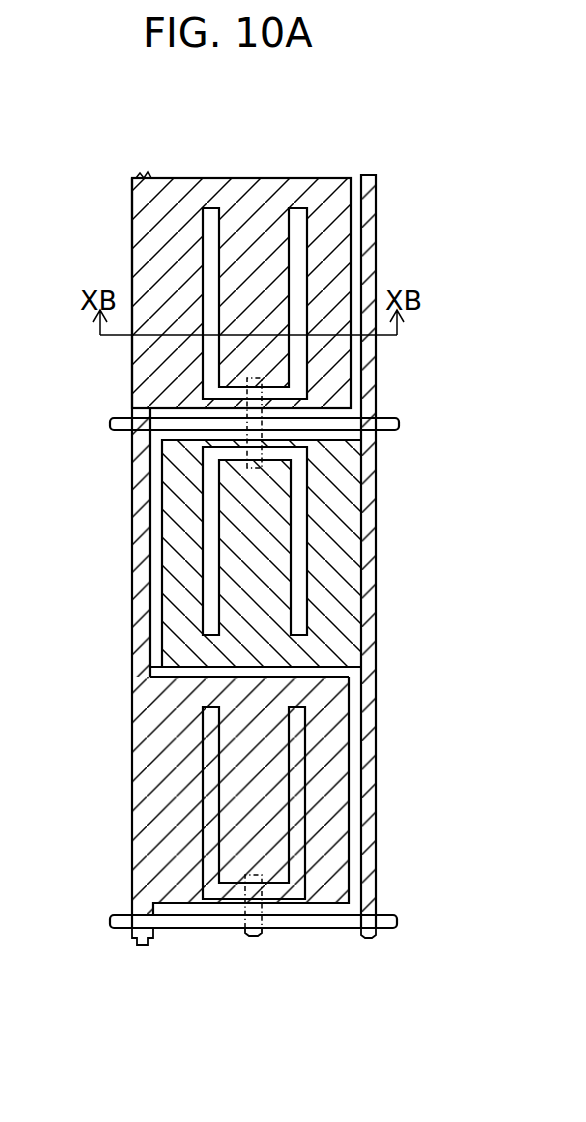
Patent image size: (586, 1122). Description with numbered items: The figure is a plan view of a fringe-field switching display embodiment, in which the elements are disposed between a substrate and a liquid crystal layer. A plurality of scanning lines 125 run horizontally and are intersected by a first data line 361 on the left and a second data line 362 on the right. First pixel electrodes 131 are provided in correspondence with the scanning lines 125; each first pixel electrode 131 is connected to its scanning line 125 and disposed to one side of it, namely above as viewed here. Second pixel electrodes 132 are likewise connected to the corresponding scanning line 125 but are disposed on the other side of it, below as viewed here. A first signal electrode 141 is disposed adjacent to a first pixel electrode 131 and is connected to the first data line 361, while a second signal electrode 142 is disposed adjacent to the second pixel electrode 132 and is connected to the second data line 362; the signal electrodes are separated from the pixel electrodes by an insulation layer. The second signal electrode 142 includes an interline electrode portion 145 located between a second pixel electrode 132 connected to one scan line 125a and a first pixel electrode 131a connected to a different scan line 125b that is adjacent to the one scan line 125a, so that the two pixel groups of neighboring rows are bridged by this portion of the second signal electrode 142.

The first signal electrode 141 is at (145, 218).
The first pixel electrodes 131 is at (302, 247).
The first pixel electrode 131a is at (300, 788).
The second pixel electrodes 132 is at (300, 493).
The second signal electrode 142 is at (345, 563).
The interline electrode portion 145 is at (288, 697).
The first data line 361 is at (137, 500).
The second data line 362 is at (368, 182).
The scanning lines 125 is at (347, 692).
The scan line 125a is at (386, 434).
The scan line 125b is at (392, 928).